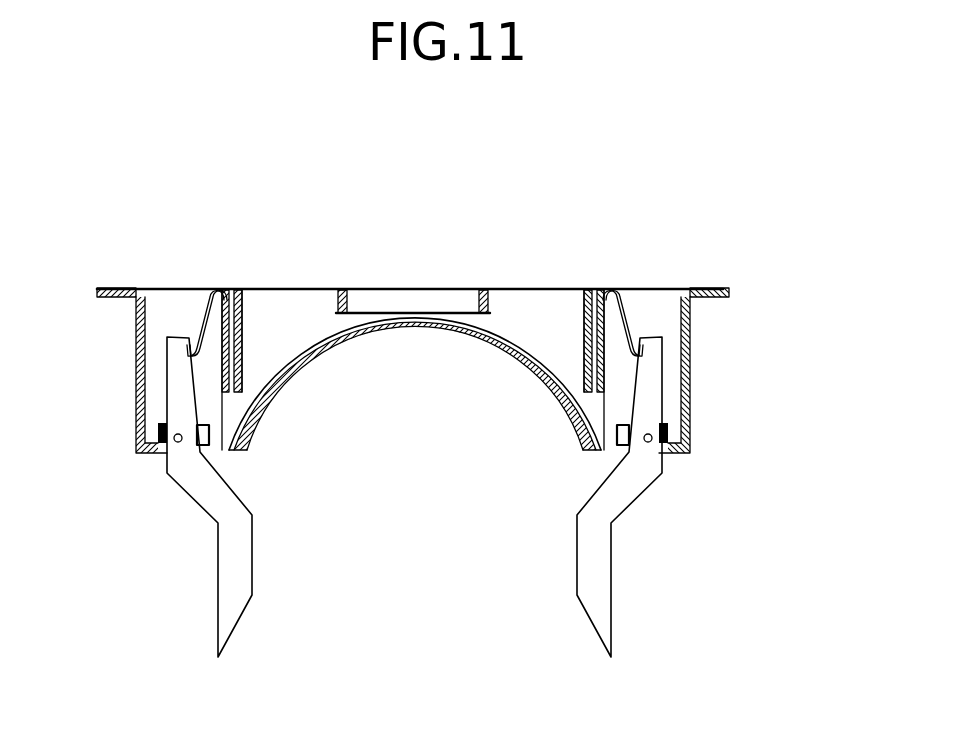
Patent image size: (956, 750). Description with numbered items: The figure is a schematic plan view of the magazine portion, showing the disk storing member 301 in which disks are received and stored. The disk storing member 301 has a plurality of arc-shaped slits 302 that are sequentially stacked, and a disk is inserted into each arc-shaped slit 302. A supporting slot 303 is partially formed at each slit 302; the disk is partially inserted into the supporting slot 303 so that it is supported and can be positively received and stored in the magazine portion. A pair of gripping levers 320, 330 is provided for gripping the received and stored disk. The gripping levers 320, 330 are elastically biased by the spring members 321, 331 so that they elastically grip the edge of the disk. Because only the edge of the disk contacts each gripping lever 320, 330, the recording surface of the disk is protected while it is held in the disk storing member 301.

The disk storing member 301 is at (690, 380).
The arc-shaped slit 302 is at (293, 367).
The supporting slot 303 is at (405, 313).
The gripping lever 320 is at (230, 568).
The spring member 321 is at (207, 291).
The gripping lever 330 is at (600, 594).
The spring member 331 is at (627, 290).